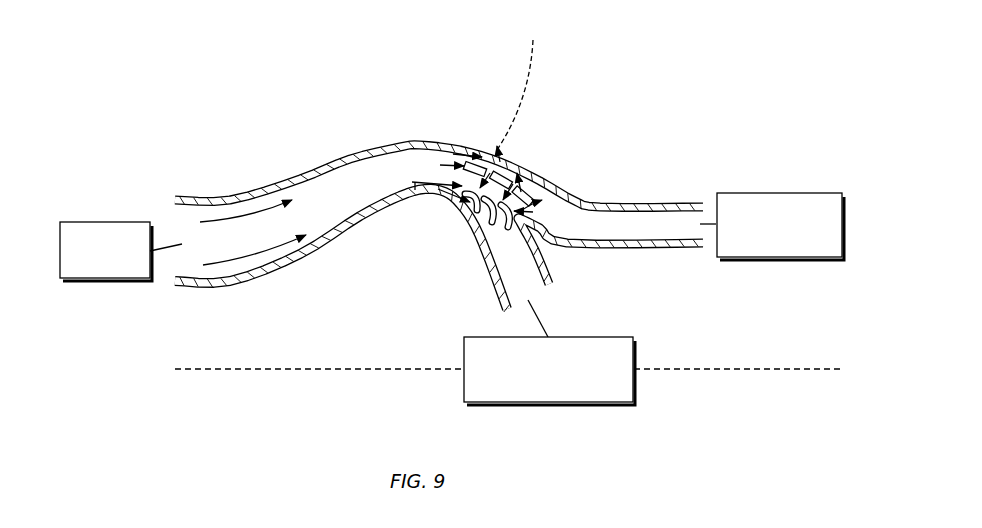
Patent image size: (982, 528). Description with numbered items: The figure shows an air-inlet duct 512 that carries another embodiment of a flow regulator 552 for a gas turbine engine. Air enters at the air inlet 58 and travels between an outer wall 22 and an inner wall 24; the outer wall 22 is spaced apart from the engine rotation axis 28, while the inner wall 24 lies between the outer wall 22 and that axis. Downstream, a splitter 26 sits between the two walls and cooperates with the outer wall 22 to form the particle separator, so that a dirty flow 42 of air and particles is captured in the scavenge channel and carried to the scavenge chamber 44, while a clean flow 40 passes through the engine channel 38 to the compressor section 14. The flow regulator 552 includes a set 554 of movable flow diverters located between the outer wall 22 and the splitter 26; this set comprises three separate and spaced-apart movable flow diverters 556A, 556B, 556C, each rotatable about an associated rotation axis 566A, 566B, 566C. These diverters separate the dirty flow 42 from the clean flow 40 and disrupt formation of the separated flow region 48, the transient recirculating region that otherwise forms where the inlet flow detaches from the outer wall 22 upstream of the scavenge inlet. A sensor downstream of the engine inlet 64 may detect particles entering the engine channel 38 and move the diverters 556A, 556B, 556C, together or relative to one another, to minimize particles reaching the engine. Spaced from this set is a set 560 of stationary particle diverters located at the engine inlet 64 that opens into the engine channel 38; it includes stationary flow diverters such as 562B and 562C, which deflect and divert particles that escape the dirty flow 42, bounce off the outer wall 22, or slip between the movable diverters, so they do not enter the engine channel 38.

The outer wall 22 is at (221, 197).
The inner wall 24 is at (295, 262).
The dirty flow 42 is at (420, 147).
The clean flow 40 is at (412, 193).
The set of movable flow diverters 554 is at (426, 150).
The set of stationary particle diverters 560 is at (422, 192).
The movable flow diverter 556A is at (475, 164).
The movable flow diverter 556B is at (503, 176).
The movable flow diverter 556C is at (526, 190).
The rotation axis 566A is at (496, 145).
The rotation axis 566B is at (528, 162).
The rotation axis 566C is at (545, 198).
The stationary flow diverter 562B is at (492, 224).
The stationary flow diverter 562C is at (469, 216).
The engine inlet 64 is at (483, 212).
The engine channel 38 is at (567, 233).
The splitter 26 is at (554, 255).
The air inlet 58 is at (108, 280).
The compressor section 14 is at (552, 403).
The scavenge chamber 44 is at (780, 258).
The engine rotation axis 28 is at (247, 370).
The air-inlet duct 512 is at (655, 143).
The flow regulator 552 is at (544, 86).
The separated flow region 48 is at (522, 84).